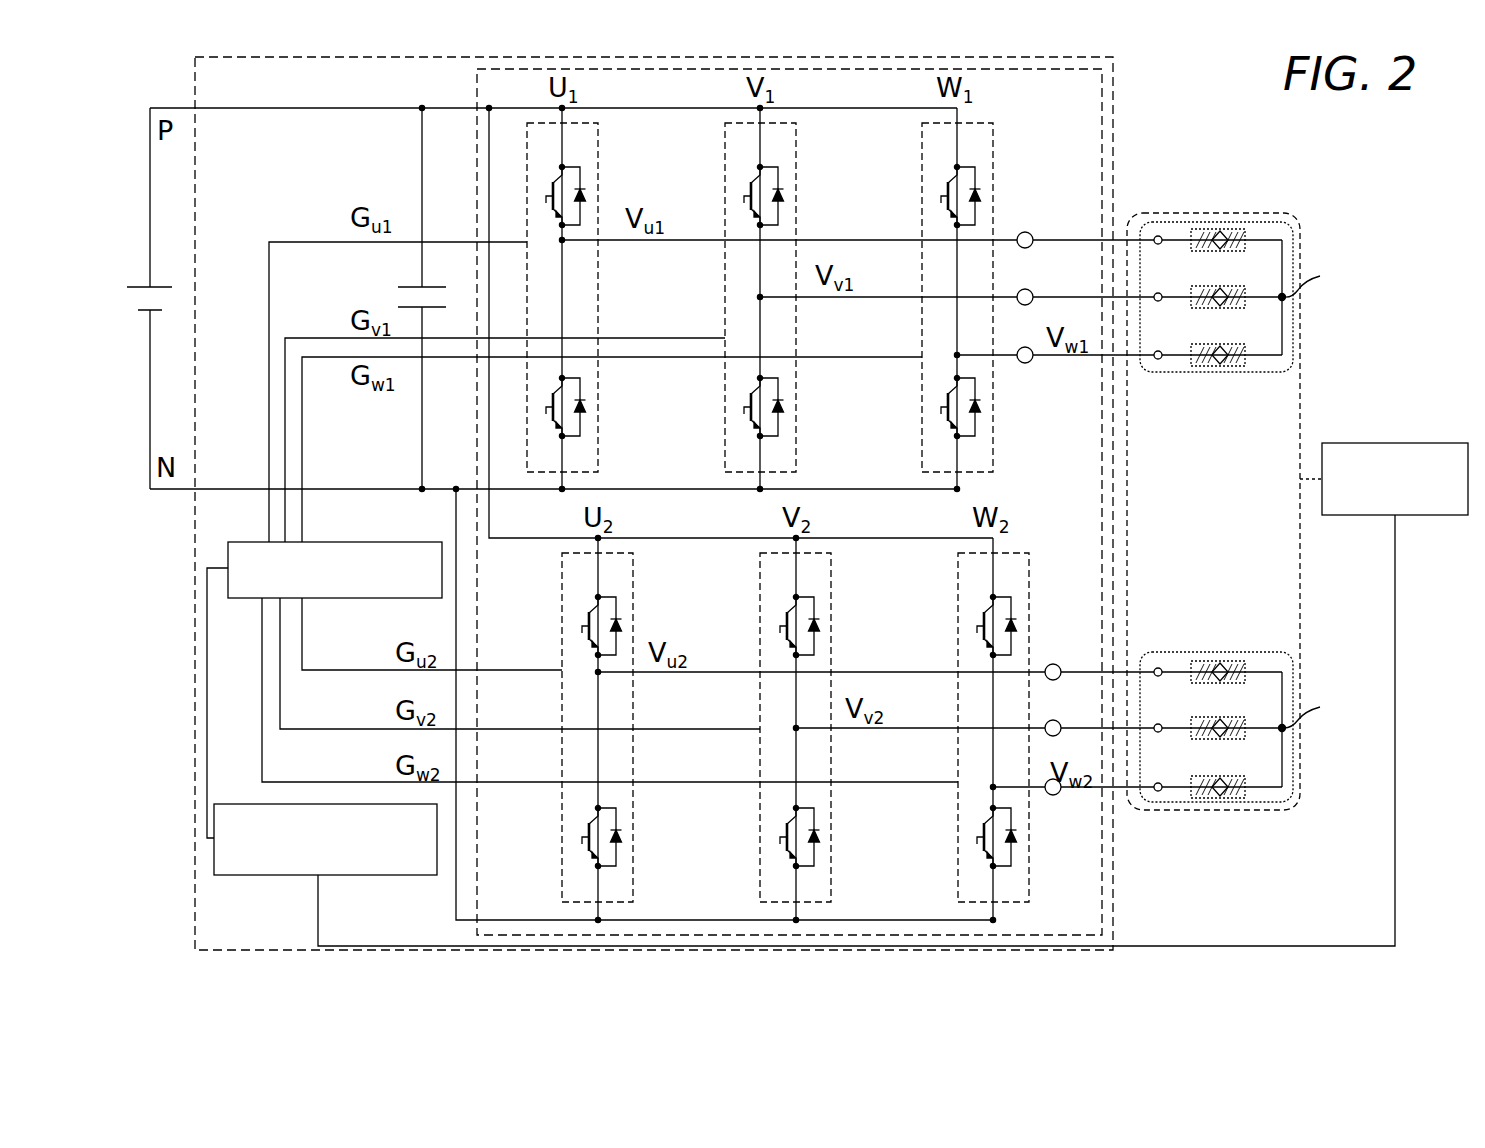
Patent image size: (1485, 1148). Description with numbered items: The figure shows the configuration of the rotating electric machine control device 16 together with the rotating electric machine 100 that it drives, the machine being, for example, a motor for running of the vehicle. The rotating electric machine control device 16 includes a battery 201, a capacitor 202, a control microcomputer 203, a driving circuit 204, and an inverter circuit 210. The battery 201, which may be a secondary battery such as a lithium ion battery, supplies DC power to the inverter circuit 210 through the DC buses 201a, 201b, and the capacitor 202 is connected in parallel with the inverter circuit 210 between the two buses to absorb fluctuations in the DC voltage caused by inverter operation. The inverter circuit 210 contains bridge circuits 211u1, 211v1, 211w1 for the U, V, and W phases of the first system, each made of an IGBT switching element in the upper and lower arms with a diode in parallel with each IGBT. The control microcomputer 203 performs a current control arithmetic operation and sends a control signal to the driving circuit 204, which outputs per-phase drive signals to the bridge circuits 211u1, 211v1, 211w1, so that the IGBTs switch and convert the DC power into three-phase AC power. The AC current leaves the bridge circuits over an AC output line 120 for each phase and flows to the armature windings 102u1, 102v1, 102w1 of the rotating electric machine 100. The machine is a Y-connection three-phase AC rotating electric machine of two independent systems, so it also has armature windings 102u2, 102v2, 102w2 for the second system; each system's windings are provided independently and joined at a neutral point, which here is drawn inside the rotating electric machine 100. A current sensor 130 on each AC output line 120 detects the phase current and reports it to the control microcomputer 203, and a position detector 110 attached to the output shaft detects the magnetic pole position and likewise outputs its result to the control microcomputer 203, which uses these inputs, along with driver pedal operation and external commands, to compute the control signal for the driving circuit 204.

The rotating electric machine control device 16 is at (1113, 112).
The inverter circuit 210 is at (1103, 180).
The battery 201 is at (140, 287).
The DC bus 201a is at (165, 108).
The DC bus 201b is at (170, 492).
The capacitor 202 is at (412, 287).
The control microcomputer 203 is at (355, 877).
The driving circuit 204 is at (352, 542).
The bridge circuit 211u1 is at (598, 180).
The bridge circuit 211v1 is at (796, 180).
The bridge circuit 211w1 is at (922, 175).
The AC output line 120 is at (1055, 360).
The current sensor 130 is at (1025, 364).
The rotating electric machine 100 is at (1263, 519).
The armature winding 102u1 is at (1215, 240).
The armature winding 102v1 is at (1245, 302).
The armature winding 102w1 is at (1220, 368).
The armature winding 102u2 is at (1215, 672).
The armature winding 102v2 is at (1245, 733).
The armature winding 102w2 is at (1220, 800).
The position detector 110 is at (1366, 443).